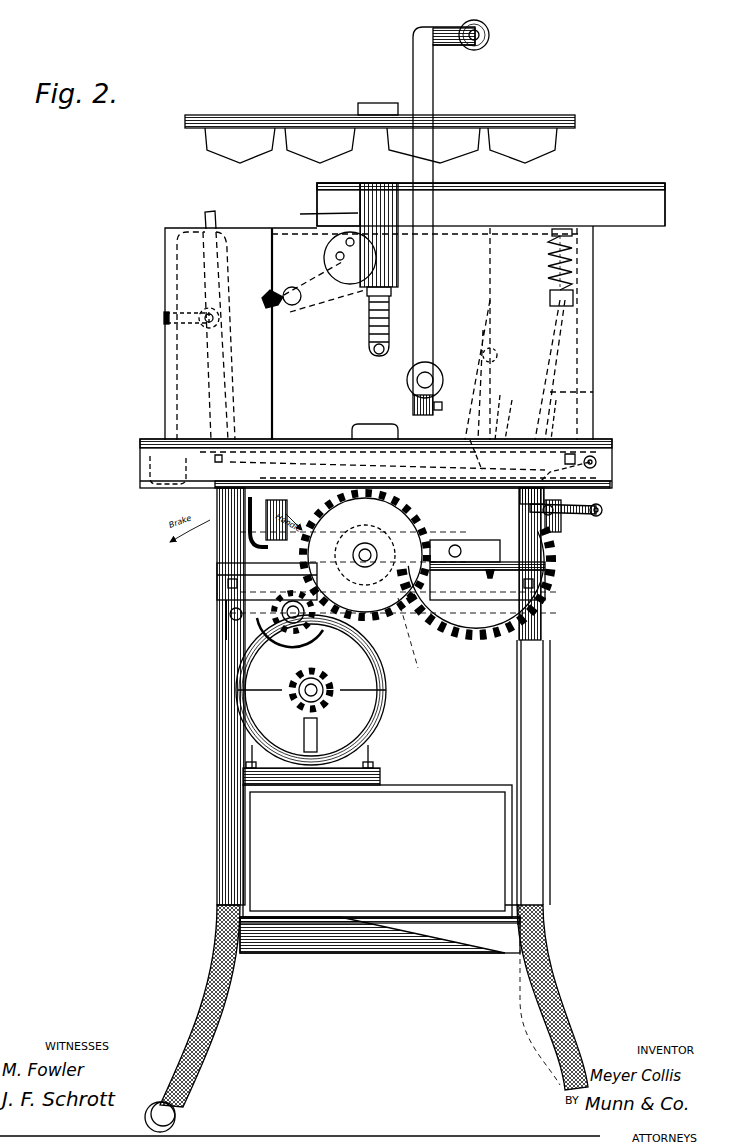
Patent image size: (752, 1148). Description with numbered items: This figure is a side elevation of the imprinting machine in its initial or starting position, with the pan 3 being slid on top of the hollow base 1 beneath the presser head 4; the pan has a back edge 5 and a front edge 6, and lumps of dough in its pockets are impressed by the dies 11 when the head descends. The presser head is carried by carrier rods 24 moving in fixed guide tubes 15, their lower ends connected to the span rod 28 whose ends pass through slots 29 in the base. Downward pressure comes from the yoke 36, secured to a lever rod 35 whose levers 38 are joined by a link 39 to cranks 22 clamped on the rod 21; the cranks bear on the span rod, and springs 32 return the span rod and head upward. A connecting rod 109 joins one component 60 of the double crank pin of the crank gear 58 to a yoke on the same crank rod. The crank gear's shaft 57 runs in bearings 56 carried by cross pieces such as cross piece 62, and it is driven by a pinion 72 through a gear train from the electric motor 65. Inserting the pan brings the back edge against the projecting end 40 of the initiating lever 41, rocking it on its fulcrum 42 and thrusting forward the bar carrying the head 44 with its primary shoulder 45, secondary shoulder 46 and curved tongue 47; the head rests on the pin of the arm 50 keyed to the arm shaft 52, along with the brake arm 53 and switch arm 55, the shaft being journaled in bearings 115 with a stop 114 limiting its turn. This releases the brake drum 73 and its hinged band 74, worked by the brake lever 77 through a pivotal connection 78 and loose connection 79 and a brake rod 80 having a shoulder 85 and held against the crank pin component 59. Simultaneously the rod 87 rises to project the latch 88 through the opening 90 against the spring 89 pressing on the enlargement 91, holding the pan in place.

The hollow base 1 is at (588, 357).
The pan 3 is at (612, 188).
The presser head 4 is at (533, 119).
The back edge 5 is at (315, 195).
The front edge 6 is at (668, 199).
The dies 11 is at (530, 152).
The guide tubes 15 is at (302, 208).
The rod 21 is at (296, 306).
The crank 22 is at (322, 284).
The carrier rods 24 is at (383, 148).
The span rod 28 is at (393, 300).
The slots 29 is at (368, 334).
The springs 32 is at (373, 351).
The lever rod 35 is at (409, 383).
The yoke 36 is at (425, 109).
The levers 38 is at (493, 367).
The link 39 is at (495, 304).
The projecting end 40 is at (205, 213).
The initiating lever 41 is at (200, 270).
The fulcrum 42 is at (164, 316).
The head 44 is at (497, 412).
The primary shoulder 45 is at (516, 420).
The secondary shoulder 46 is at (551, 370).
The curved tongue 47 is at (558, 420).
The arm 50 is at (603, 509).
The shaft 52 is at (575, 513).
The brake arm 53 is at (562, 528).
The switch arm 55 is at (598, 464).
The bearings 56 is at (505, 568).
The shaft 57 is at (500, 578).
The crank gear 58 is at (500, 636).
The crank pin component 59 is at (470, 441).
The crank pin component 60 is at (365, 543).
The cross piece 62 is at (495, 578).
The electric motor 65 is at (388, 705).
The pinion 72 is at (462, 654).
The drum 73 is at (268, 631).
The hinged band 74 is at (262, 660).
The brake lever 77 is at (228, 586).
The pivotal connection 78 is at (230, 632).
The loose connection 79 is at (215, 613).
The brake rod 80 is at (366, 432).
The shoulder 85 is at (465, 537).
The rod 87 is at (595, 392).
The latch 88 is at (562, 230).
The spring 89 is at (578, 262).
The opening 90 is at (576, 234).
The enlargement 91 is at (580, 280).
The connecting rod 109 is at (495, 357).
The stop 114 is at (556, 520).
The bearings 115 is at (190, 472).